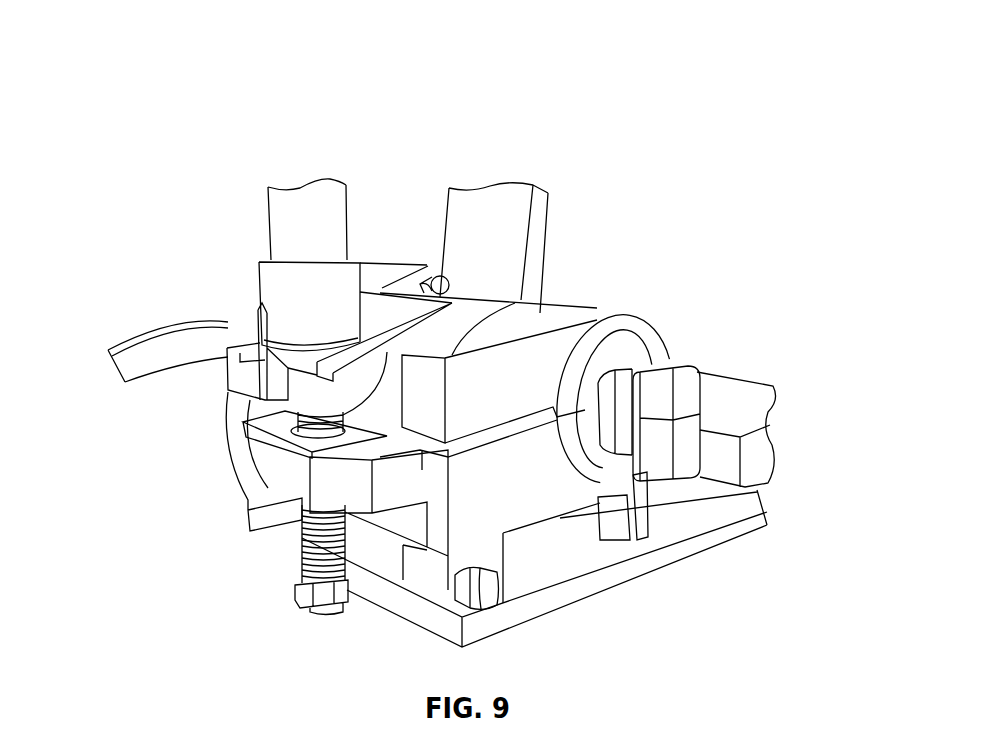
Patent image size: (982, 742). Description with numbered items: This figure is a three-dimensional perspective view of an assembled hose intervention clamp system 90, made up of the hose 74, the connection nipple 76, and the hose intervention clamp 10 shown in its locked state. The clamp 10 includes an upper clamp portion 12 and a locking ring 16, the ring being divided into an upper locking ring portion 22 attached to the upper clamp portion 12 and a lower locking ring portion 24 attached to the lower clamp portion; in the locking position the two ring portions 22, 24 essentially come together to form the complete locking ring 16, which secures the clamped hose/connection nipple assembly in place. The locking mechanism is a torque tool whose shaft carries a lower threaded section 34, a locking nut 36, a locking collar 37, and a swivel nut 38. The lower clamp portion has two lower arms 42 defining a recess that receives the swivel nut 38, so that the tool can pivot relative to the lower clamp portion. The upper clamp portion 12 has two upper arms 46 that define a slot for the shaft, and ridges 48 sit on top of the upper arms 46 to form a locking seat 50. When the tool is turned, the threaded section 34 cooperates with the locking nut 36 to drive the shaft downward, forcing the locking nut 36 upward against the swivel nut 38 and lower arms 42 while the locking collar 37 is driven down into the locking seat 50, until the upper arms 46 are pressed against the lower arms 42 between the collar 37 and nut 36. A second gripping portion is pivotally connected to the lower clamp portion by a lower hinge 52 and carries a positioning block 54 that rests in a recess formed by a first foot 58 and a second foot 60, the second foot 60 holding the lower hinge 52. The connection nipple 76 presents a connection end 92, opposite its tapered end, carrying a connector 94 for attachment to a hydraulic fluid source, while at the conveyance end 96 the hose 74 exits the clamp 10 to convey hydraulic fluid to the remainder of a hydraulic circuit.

The hose intervention clamp system 90 is at (427, 92).
The hose intervention clamp 10 is at (565, 190).
The upper clamp portion 12 is at (542, 303).
The upper locking ring portion 22 is at (610, 353).
The locking ring 16 is at (598, 393).
The connector 94 is at (700, 373).
The connection end 92 is at (772, 416).
The locking collar 37 is at (273, 285).
The locking seat 50 is at (257, 363).
The conveyance end 96 is at (117, 368).
The hose 74 is at (173, 370).
The upper arms 46 is at (300, 400).
The ridges 48 is at (283, 448).
The swivel nut 38 is at (283, 480).
The lower threaded section 34 is at (300, 553).
The locking nut 36 is at (307, 607).
The lower arms 42 is at (355, 480).
The second foot 60 is at (468, 547).
The lower hinge 52 is at (482, 593).
The positioning block 54 is at (537, 562).
The lower locking ring portion 24 is at (637, 527).
The first foot 58 is at (598, 463).
The connection nipple 76 is at (612, 445).